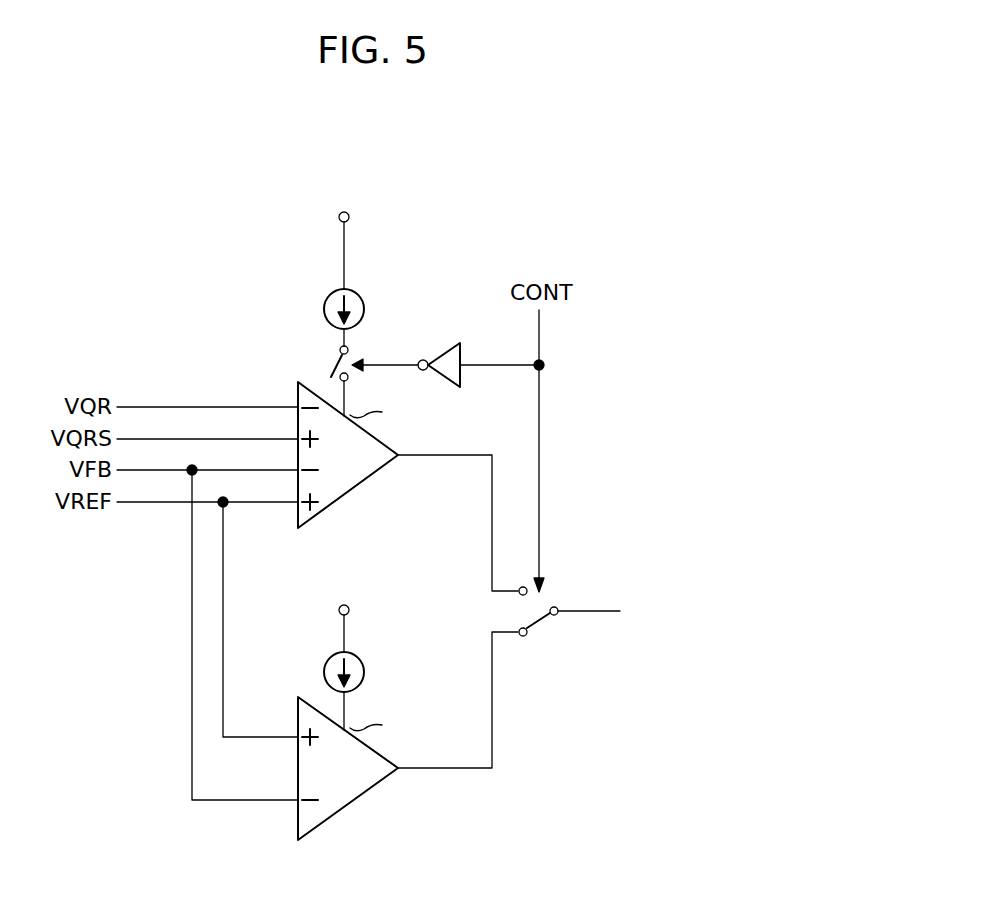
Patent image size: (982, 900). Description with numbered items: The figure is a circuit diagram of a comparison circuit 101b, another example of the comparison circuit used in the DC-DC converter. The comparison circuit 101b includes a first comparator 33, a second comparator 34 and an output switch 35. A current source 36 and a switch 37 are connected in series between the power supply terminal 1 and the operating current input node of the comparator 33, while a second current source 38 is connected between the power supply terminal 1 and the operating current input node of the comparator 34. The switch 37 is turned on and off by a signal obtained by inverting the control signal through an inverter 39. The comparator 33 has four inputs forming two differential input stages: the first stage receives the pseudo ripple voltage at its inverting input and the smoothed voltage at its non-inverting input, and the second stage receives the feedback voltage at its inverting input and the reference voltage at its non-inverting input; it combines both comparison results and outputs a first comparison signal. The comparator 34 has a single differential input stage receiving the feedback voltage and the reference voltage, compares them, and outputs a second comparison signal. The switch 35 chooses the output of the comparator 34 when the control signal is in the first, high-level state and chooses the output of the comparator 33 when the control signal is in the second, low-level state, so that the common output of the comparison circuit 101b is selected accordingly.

The comparison circuit 101b is at (670, 204).
The power supply terminal 1 is at (339, 218).
The comparator 33 is at (350, 490).
The comparator 34 is at (350, 802).
The switch 35 is at (540, 618).
The current source 36 is at (362, 302).
The switch 37 is at (334, 364).
The current source 38 is at (362, 665).
The inverter 39 is at (448, 356).